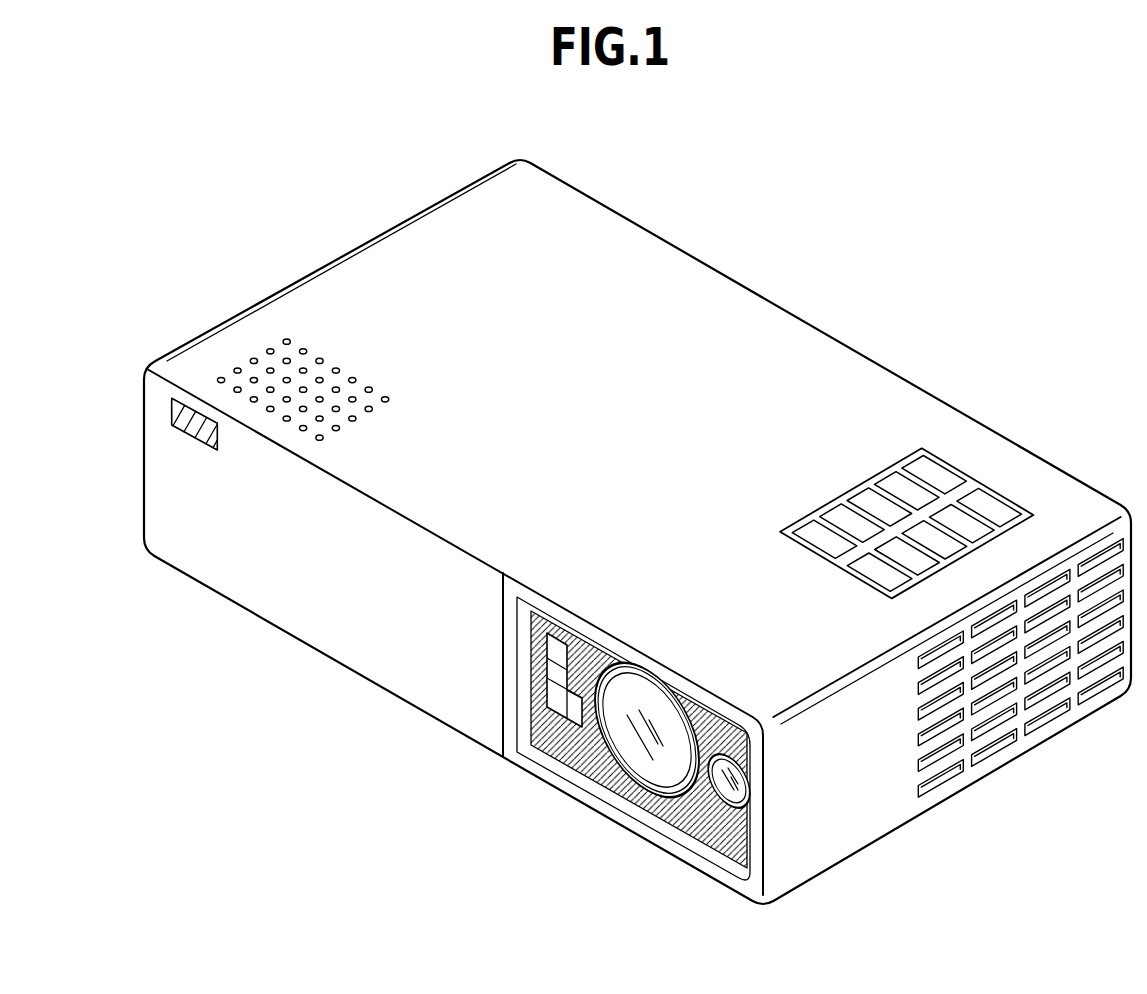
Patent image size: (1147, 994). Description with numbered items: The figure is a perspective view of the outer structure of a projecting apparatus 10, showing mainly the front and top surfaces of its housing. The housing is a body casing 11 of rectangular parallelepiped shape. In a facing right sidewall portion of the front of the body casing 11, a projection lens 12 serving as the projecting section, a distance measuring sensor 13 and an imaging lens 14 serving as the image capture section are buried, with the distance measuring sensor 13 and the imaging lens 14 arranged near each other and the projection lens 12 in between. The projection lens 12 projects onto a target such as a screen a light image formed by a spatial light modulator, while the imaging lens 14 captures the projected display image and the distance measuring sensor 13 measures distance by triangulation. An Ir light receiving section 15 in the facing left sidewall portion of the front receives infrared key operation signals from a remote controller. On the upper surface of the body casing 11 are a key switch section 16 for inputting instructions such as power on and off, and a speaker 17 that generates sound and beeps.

The projecting apparatus 10 is at (952, 240).
The body casing 11 is at (682, 248).
The projection lens 12 is at (622, 732).
The distance measuring sensor 13 is at (557, 690).
The imaging lens 14 is at (737, 780).
The Ir light receiving section 15 is at (172, 422).
The key switch section 16 is at (975, 478).
The speaker 17 is at (321, 363).